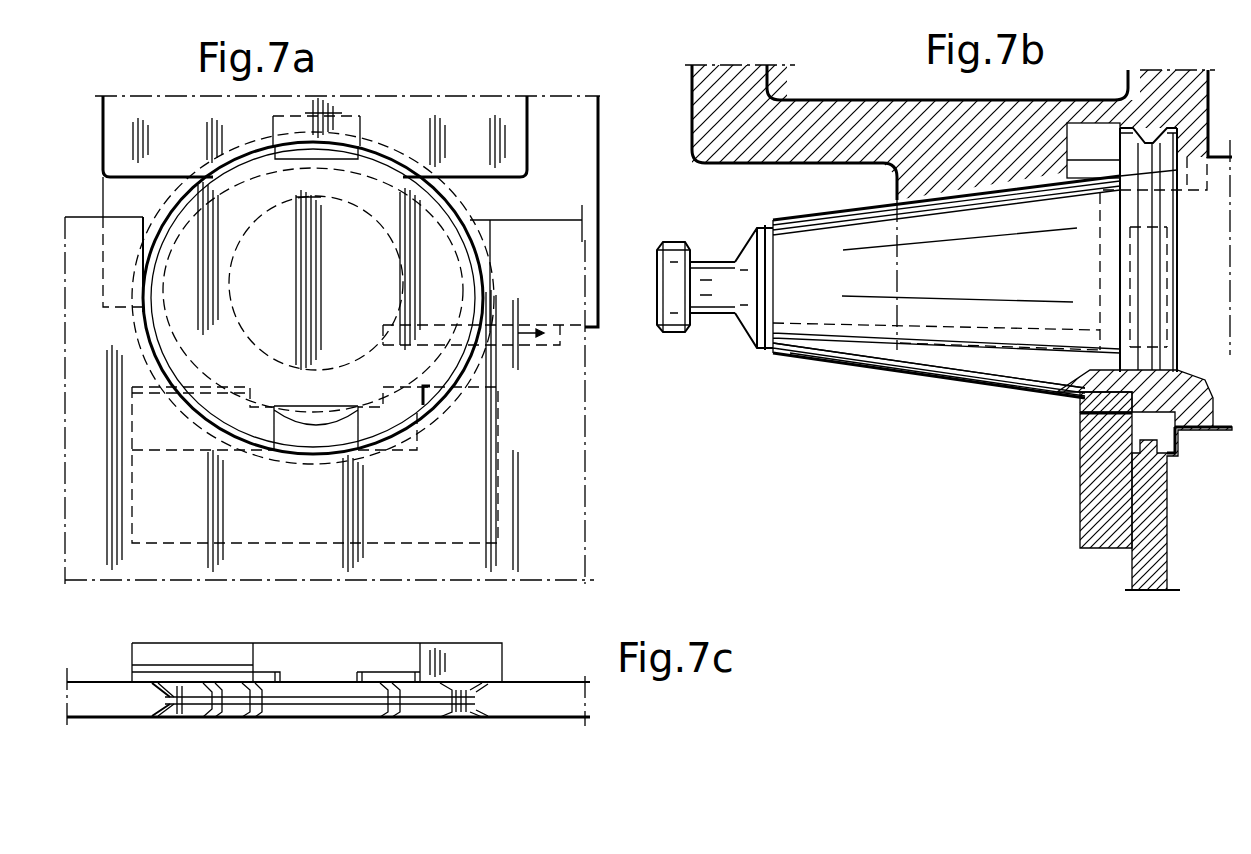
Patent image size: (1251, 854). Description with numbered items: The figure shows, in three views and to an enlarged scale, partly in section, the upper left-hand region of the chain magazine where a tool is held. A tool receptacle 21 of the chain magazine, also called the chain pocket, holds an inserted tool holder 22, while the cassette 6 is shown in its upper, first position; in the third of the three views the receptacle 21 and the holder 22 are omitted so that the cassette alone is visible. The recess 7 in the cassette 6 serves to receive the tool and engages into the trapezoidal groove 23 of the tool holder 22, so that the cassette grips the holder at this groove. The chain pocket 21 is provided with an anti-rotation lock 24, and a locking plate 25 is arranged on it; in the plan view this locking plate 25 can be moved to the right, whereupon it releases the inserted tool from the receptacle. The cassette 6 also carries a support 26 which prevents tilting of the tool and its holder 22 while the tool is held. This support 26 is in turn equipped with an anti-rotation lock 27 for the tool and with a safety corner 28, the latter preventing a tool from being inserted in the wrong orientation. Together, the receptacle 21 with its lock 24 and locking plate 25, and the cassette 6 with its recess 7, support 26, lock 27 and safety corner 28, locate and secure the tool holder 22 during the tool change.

In FIG. 7A, the cassette 6 is at (565, 565).
In FIG. 7B, the cassette 6 is at (1158, 520).
In FIG. 7C, the cassette 6 is at (565, 703).
In FIG. 7A, the recess in the cassette 7 is at (427, 410).
In FIG. 7B, the recess in the cassette 7 is at (1120, 307).
In FIG. 7C, the recess in the cassette 7 is at (440, 710).
In FIG. 7A, the tool receptacle 21 is at (478, 108).
In FIG. 7B, the tool receptacle 21 is at (855, 108).
In FIG. 7B, the tool holder 22 is at (978, 372).
In FIG. 7B, the trapezoidal groove 23 is at (1150, 212).
In FIG. 7A, the anti-rotation lock 24 is at (345, 118).
In FIG. 7B, the anti-rotation lock 24 is at (1092, 132).
In FIG. 7A, the locking plate 25 is at (552, 335).
In FIG. 7B, the locking plate 25 is at (912, 338).
In FIG. 7A, the support 26 is at (482, 505).
In FIG. 7B, the support 26 is at (1095, 518).
In FIG. 7C, the support 26 is at (488, 662).
In FIG. 7A, the anti-rotation lock 27 is at (306, 425).
In FIG. 7B, the anti-rotation lock 27 is at (1083, 413).
In FIG. 7C, the anti-rotation lock 27 is at (358, 672).
In FIG. 7A, the safety corner 28 is at (426, 390).
In FIG. 7C, the safety corner 28 is at (420, 680).